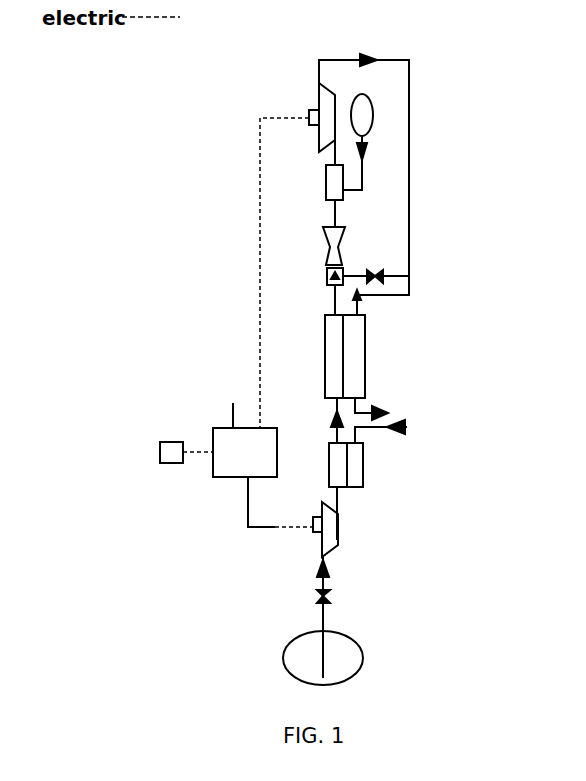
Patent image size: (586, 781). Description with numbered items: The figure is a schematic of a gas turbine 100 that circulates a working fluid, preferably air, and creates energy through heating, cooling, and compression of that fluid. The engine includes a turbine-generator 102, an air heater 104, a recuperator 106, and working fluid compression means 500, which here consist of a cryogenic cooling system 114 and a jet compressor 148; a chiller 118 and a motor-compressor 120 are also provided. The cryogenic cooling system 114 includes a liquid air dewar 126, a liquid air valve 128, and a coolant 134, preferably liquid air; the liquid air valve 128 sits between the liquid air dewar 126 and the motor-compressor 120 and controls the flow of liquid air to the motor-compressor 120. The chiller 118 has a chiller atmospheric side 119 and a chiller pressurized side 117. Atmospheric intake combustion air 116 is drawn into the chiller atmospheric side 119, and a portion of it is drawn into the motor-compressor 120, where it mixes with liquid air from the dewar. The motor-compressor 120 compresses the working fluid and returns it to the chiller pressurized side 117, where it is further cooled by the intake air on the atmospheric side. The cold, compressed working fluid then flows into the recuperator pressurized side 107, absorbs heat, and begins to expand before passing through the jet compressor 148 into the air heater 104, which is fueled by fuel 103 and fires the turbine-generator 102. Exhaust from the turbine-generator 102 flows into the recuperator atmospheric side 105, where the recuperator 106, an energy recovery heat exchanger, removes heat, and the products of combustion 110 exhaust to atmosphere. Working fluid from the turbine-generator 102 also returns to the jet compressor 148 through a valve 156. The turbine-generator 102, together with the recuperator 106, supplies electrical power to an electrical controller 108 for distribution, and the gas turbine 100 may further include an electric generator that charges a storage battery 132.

The gas turbine 100 is at (425, 162).
The turbine-generator 102 is at (269, 246).
The fuel 103 is at (410, 142).
The air heater 104 is at (397, 184).
The jet compressor 148 is at (412, 255).
The working fluid compression means 500 is at (328, 383).
The valve 156 is at (418, 261).
The recuperator atmospheric side 105 is at (402, 371).
The recuperator 106 is at (411, 356).
The recuperator pressurized side 107 is at (390, 349).
The products of combustion 110 is at (431, 396).
The atmospheric intake combustion air 116 is at (446, 417).
The chiller pressurized side 117 is at (337, 463).
The chiller 118 is at (402, 473).
The chiller atmospheric side 119 is at (409, 481).
The coolant 134 is at (385, 561).
The liquid air valve 128 is at (266, 634).
The liquid air dewar 126 is at (375, 644).
The electrical controller 108 is at (213, 433).
The storage battery 132 is at (131, 442).
The cryogenic cooling system 114 is at (246, 504).
The motor-compressor 120 is at (246, 529).